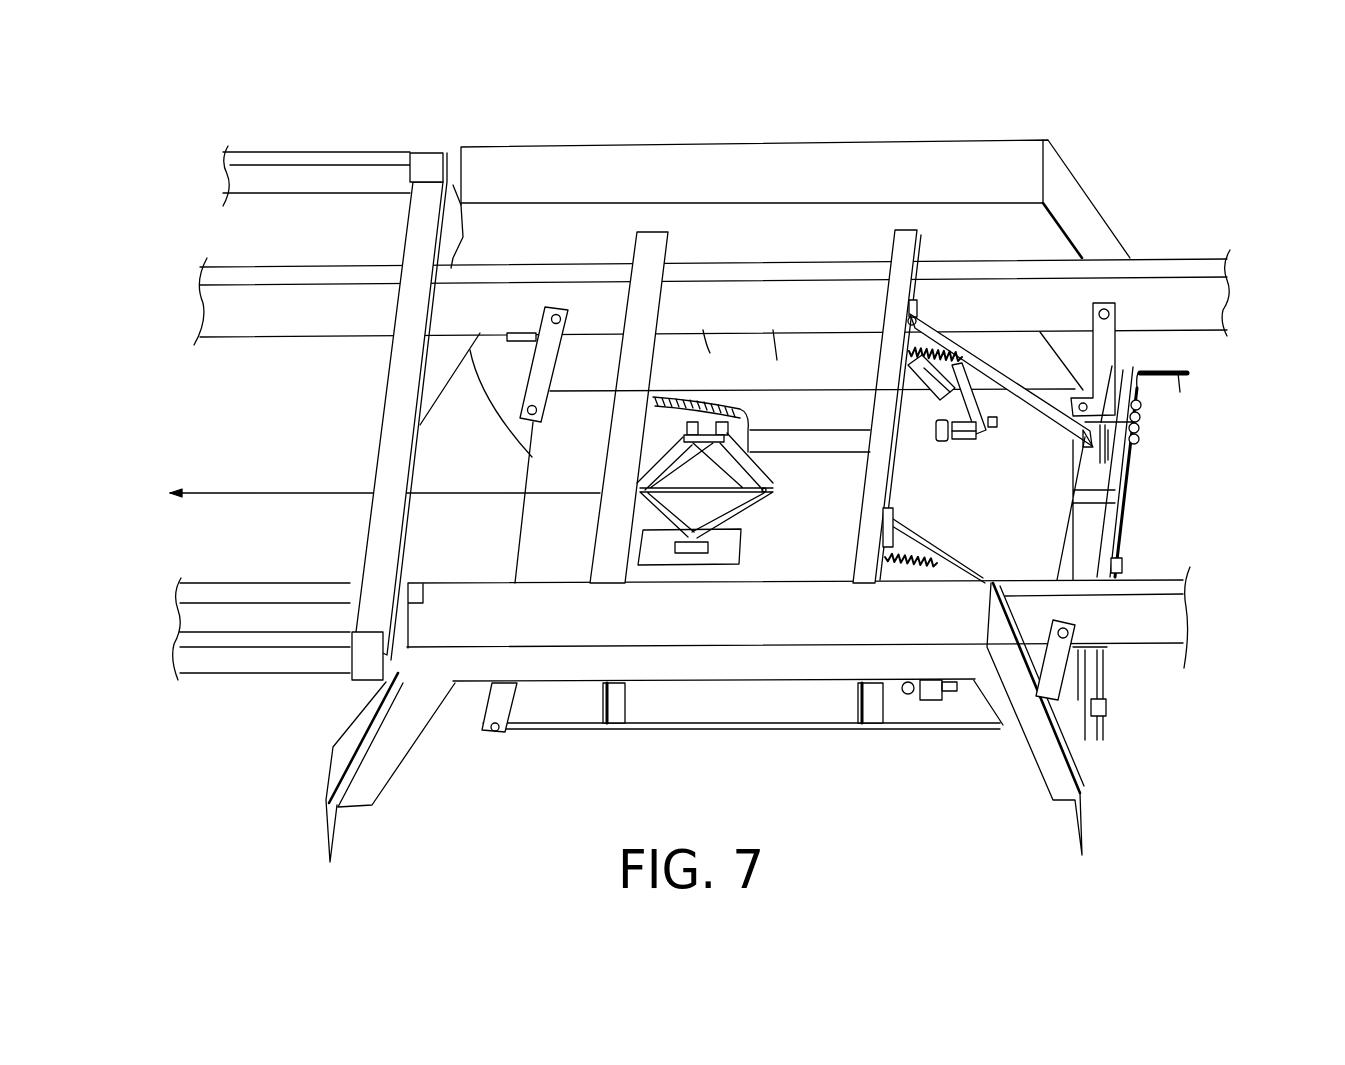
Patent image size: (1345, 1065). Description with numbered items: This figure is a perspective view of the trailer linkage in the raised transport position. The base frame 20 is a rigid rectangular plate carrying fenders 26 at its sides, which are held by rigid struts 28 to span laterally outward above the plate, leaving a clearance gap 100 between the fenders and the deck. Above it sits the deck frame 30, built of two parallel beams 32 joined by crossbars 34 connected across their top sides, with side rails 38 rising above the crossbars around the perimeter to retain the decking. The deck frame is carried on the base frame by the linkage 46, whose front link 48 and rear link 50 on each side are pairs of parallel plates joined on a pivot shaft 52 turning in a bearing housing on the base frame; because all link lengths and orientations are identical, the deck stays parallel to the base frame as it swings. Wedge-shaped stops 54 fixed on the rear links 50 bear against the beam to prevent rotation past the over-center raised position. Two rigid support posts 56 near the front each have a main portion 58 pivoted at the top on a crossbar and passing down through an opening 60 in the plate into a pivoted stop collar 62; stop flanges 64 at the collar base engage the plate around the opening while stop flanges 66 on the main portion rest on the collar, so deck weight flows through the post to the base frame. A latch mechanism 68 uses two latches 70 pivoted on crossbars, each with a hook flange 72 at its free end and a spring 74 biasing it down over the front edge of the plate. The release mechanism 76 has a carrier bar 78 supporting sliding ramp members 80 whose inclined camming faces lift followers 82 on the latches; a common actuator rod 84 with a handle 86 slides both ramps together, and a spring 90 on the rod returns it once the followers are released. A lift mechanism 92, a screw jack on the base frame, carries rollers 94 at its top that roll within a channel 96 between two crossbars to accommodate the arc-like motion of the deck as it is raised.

The base frame 20 is at (800, 547).
The fenders 26 is at (850, 150).
The rigid struts 28 is at (625, 705).
The deck frame 30 is at (234, 700).
The beams 32 is at (272, 318).
The crossbars 34 is at (645, 250).
The side rails 38 is at (285, 170).
The linkage 46 is at (521, 303).
The front link 48 is at (1105, 340).
The rear link 50 is at (548, 363).
The pivot shaft 52 is at (558, 307).
The stops 54 is at (528, 342).
The rigid support posts 56 is at (969, 474).
The main portion 58 is at (915, 350).
The openings 60 is at (996, 428).
The stop collar 62 is at (935, 368).
The stop flanges 64 is at (957, 440).
The stop flanges 66 is at (930, 382).
The latch mechanism 68 is at (1018, 350).
The latches 70 is at (990, 360).
The hook flange 72 is at (1093, 462).
The spring 74 is at (910, 357).
The release mechanism 76 is at (1200, 437).
The carrier bar 78 is at (1103, 687).
The ramp members 80 is at (1104, 462).
The followers 82 is at (1140, 408).
The common actuator rod 84 is at (1108, 677).
The handle 86 is at (1178, 390).
The spring 90 is at (1140, 427).
The lift mechanism 92 is at (752, 565).
The rollers 94 is at (728, 418).
The channel 96 is at (752, 385).
The clearance gap 100 is at (450, 153).